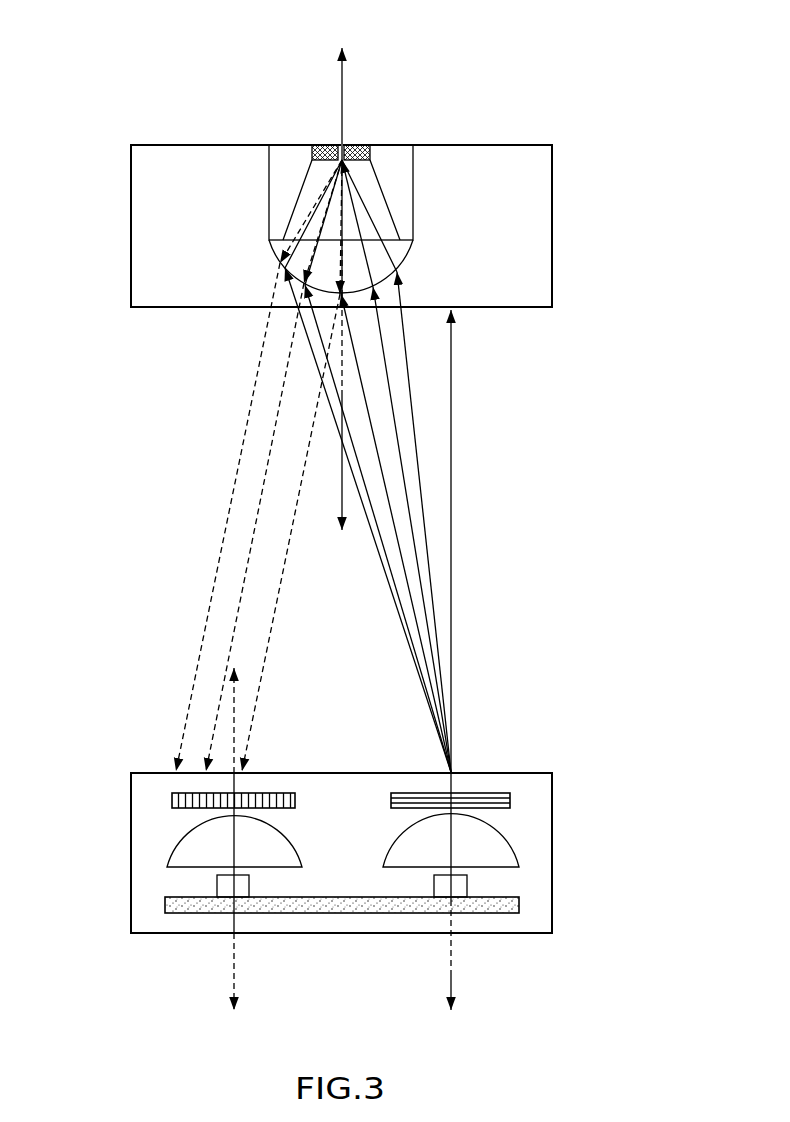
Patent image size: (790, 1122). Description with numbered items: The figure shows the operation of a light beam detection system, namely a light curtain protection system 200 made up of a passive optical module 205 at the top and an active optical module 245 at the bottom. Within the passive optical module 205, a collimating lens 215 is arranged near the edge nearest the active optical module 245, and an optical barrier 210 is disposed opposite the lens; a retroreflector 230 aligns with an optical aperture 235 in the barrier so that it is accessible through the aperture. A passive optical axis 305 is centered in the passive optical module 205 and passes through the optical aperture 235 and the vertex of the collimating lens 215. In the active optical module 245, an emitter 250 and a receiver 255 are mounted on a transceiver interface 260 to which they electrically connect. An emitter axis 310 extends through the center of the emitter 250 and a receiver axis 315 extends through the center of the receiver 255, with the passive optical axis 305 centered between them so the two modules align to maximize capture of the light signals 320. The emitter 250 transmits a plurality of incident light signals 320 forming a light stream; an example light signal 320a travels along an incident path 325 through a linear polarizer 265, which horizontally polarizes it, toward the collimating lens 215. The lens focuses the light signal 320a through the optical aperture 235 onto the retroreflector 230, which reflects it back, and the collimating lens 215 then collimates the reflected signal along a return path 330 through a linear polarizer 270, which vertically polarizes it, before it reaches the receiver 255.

The light curtain protection system 200 is at (98, 379).
The passive optical module 205 is at (552, 185).
The optical barrier 210 is at (371, 160).
The collimating lens 215 is at (408, 263).
The retroreflector 230 is at (330, 145).
The optical aperture 235 is at (348, 145).
The active optical module 245 is at (552, 905).
The emitter 250 is at (460, 887).
The receiver 255 is at (225, 888).
The transceiver interface 260 is at (380, 915).
The linear polarizer 265 is at (490, 793).
The linear polarizer 270 is at (180, 793).
The passive optical axis 305 is at (342, 84).
The emitter axis 310 is at (452, 975).
The receiver axis 315 is at (233, 976).
The incident light signals 320 is at (467, 593).
The light signal 320a is at (422, 483).
The incident path 325 is at (415, 418).
The return path 330 is at (252, 407).